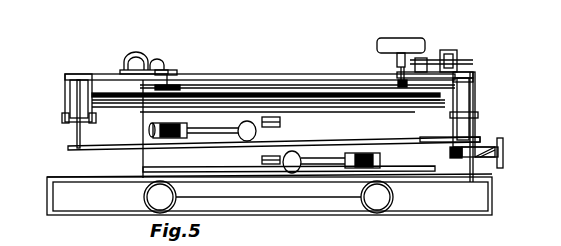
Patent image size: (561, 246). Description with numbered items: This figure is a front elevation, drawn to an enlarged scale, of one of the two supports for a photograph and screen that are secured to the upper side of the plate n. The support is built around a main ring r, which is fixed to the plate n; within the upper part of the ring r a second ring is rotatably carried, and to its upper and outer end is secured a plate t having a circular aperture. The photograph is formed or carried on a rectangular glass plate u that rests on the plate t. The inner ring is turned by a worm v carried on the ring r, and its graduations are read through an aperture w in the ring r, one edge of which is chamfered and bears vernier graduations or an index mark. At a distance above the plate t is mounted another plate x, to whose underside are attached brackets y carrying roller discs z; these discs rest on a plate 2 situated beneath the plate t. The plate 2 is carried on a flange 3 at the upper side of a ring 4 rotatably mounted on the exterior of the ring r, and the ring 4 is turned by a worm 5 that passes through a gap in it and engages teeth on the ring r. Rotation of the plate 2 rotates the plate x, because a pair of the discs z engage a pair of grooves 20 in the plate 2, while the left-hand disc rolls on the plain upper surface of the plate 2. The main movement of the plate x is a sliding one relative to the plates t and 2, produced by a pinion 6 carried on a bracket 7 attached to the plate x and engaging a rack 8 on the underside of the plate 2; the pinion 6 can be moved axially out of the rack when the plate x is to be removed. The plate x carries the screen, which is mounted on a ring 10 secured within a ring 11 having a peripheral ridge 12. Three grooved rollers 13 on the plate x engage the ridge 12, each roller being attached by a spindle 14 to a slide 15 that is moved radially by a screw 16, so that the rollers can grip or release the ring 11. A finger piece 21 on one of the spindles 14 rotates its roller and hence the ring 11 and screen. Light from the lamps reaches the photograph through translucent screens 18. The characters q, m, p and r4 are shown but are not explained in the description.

The plate 2 is at (108, 147).
The flange 3 is at (130, 151).
The ring 4 is at (143, 168).
The worm 5 is at (348, 148).
The pinion 6 is at (450, 154).
The bracket 7 is at (478, 148).
The rack 8 is at (462, 150).
The ring 10 is at (393, 90).
The ring 11 is at (347, 84).
The peripheral ridge 12 is at (310, 87).
The grooved roller 13 is at (157, 87).
The spindle 14 is at (168, 86).
The slide 15 is at (163, 67).
The screw 16 is at (138, 60).
The translucent screen 18 is at (240, 183).
The groove 20 is at (468, 155).
The finger piece 21 is at (405, 43).
The plate x is at (88, 75).
The bracket y is at (92, 90).
The roller disc z is at (72, 99).
The glass plate u is at (216, 108).
The worm v is at (152, 127).
The aperture w is at (280, 139).
The plate n is at (72, 180).
The base frame end q is at (53, 197).
The wheel m is at (144, 197).
The base plate p is at (253, 121).
The main ring r is at (392, 122).
The plate t is at (424, 124).
The bar r4 is at (440, 195).